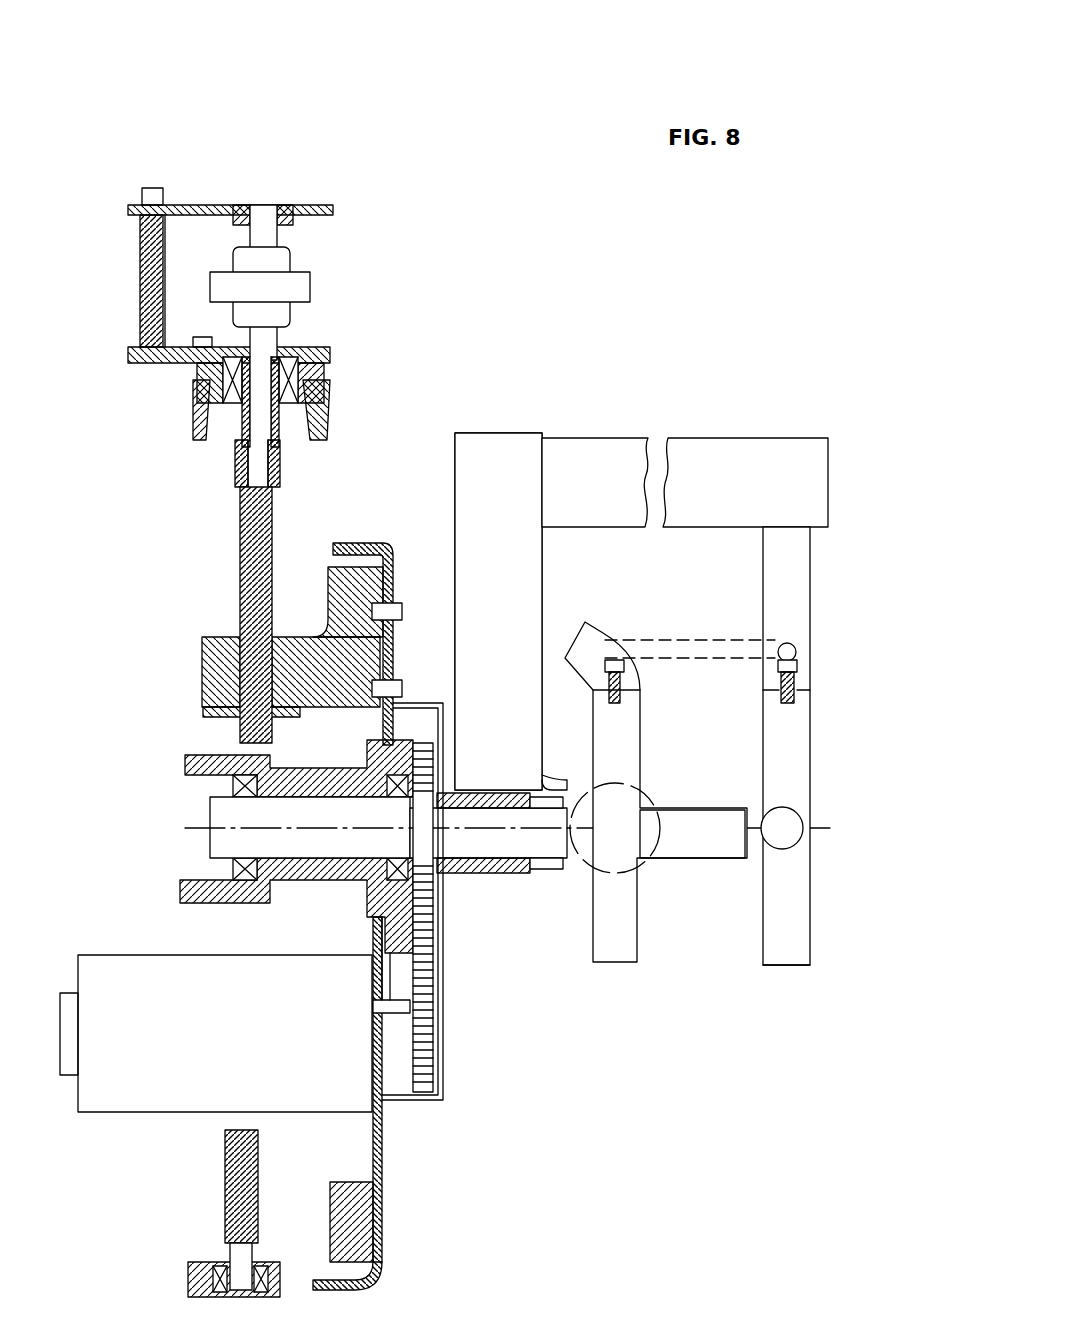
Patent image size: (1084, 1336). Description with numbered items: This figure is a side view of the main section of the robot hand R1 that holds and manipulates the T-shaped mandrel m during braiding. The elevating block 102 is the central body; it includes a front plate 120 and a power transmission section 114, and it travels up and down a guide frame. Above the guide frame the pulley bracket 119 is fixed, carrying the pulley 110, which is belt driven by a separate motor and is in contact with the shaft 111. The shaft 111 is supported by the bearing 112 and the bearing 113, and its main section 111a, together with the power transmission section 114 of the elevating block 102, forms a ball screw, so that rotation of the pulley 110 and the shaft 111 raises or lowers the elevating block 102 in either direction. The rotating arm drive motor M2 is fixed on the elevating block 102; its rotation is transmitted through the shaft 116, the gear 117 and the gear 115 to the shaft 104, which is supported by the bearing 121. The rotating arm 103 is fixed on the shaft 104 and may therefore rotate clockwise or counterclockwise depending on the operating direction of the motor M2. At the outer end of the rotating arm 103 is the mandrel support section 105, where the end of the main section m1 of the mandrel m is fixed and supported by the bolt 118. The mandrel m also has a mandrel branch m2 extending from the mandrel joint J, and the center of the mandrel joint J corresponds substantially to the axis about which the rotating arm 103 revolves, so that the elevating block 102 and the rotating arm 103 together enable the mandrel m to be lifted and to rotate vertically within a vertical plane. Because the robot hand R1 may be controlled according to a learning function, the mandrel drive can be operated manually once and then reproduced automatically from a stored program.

The robot hand R1 is at (487, 125).
The elevating block 102 is at (405, 473).
The rotating arm 103 is at (583, 465).
The shaft 104 is at (530, 845).
The mandrel support section 105 is at (830, 636).
The pulley 110 is at (310, 278).
The shaft 111 is at (240, 455).
The main section of the shaft 111a is at (240, 550).
The bearing 112 is at (232, 412).
The bearing 113 is at (230, 1272).
The power transmission section 114 is at (205, 690).
The gear 115 is at (437, 880).
The shaft 116 is at (400, 1010).
The gear 117 is at (430, 1040).
The bolt 118 is at (614, 660).
The pulley bracket 119 is at (198, 205).
The front plate 120 is at (352, 543).
The bearing 121 is at (365, 897).
The rotating arm drive motor M2 is at (142, 993).
The main section of the mandrel m1 is at (800, 742).
The mandrel branch m2 is at (800, 826).
The mandrel m is at (828, 900).
The mandrel joint J is at (638, 872).